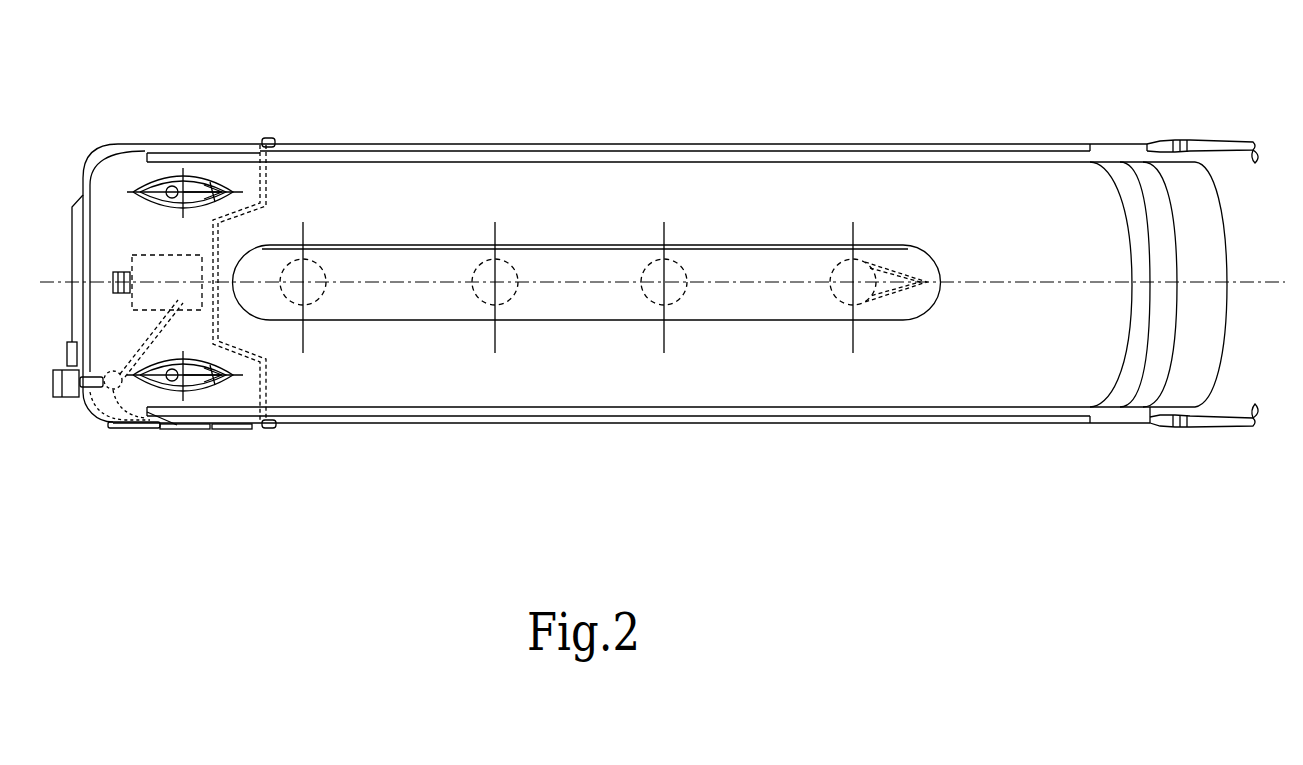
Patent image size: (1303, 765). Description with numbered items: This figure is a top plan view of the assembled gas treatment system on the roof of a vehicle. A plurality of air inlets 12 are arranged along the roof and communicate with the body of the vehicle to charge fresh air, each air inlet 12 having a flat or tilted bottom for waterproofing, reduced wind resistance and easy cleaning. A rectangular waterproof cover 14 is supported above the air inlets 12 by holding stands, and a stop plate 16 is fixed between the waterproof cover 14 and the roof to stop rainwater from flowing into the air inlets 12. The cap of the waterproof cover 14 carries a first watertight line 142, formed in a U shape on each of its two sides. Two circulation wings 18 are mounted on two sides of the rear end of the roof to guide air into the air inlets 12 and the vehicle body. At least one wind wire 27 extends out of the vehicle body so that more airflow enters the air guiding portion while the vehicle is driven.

The air inlet 12 is at (312, 270).
The waterproof cover 14 is at (418, 263).
The stop plate 16 is at (903, 300).
The circulation wing 18 is at (205, 188).
The wind wire 27 is at (232, 427).
The first watertight line 142 is at (137, 430).